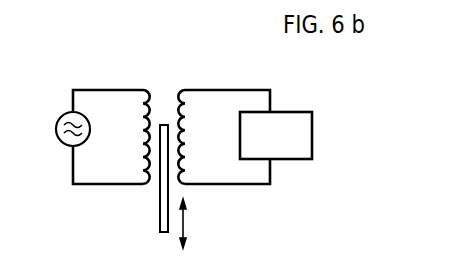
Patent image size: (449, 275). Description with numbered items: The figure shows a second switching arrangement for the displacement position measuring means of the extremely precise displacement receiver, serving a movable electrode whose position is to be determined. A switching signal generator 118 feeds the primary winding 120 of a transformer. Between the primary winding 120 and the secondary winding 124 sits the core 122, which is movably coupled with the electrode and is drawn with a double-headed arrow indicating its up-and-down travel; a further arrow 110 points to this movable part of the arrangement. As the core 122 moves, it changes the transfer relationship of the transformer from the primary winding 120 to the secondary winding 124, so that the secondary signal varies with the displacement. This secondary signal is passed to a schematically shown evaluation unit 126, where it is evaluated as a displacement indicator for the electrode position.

The measuring device / displacement direction 110 is at (192, 193).
The switching signal generator 118 is at (58, 139).
The primary winding 120 is at (143, 107).
The core 122 is at (160, 213).
The secondary winding 124 is at (182, 100).
The evaluation unit 126 is at (313, 135).